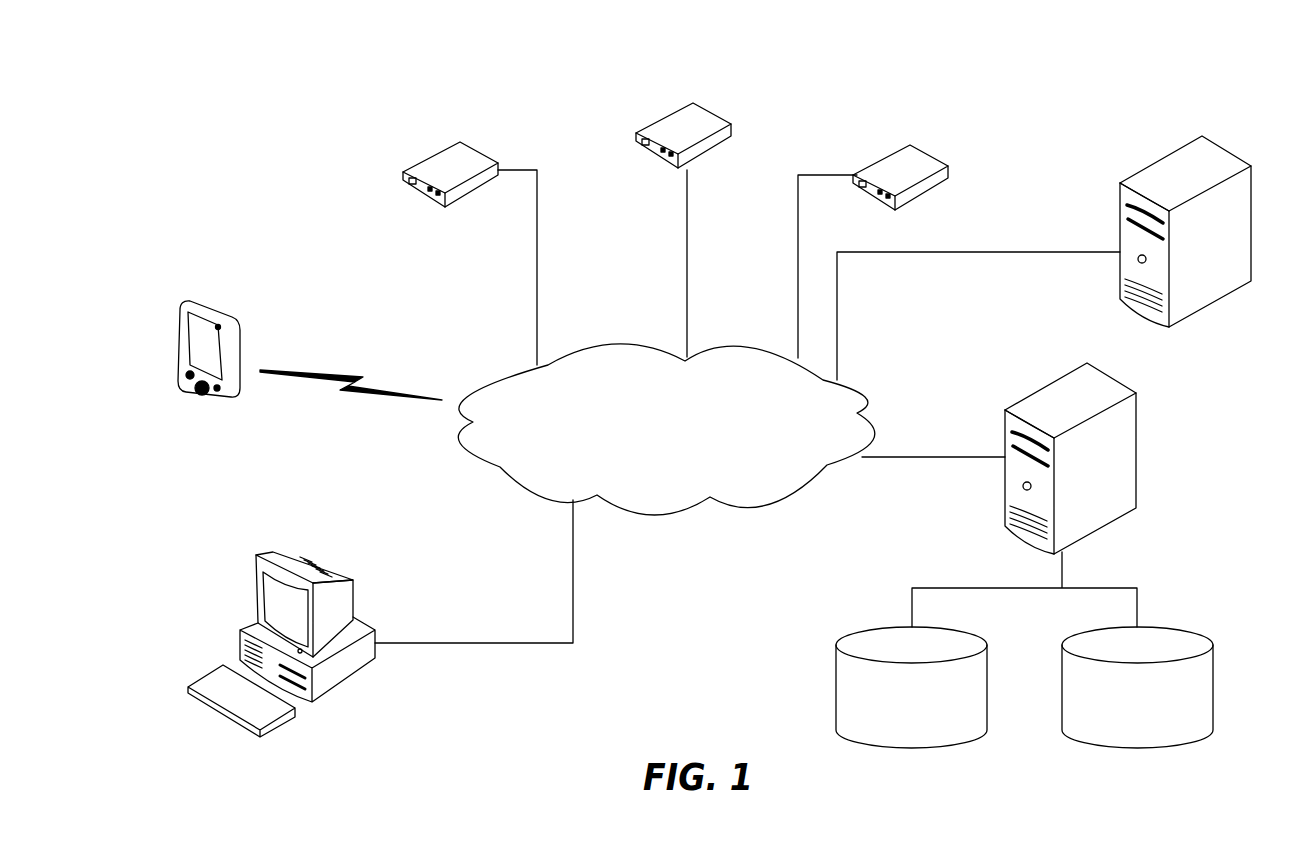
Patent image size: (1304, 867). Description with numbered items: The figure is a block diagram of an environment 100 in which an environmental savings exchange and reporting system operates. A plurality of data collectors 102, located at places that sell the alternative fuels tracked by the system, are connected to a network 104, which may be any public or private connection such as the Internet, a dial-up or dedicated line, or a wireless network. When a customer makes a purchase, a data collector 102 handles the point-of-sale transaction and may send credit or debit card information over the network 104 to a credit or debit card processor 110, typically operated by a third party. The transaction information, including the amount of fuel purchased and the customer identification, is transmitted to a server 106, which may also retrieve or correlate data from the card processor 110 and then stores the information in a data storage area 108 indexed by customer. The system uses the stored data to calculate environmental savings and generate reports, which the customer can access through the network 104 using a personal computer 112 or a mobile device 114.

The environment 100 is at (820, 62).
The data collector 102 is at (679, 234).
The network 104 is at (673, 513).
The server 106 is at (1007, 495).
The data storage area 108 is at (1024, 677).
The credit or debit card processor 110 is at (1051, 258).
The personal computer 112 is at (380, 618).
The mobile device 114 is at (310, 343).